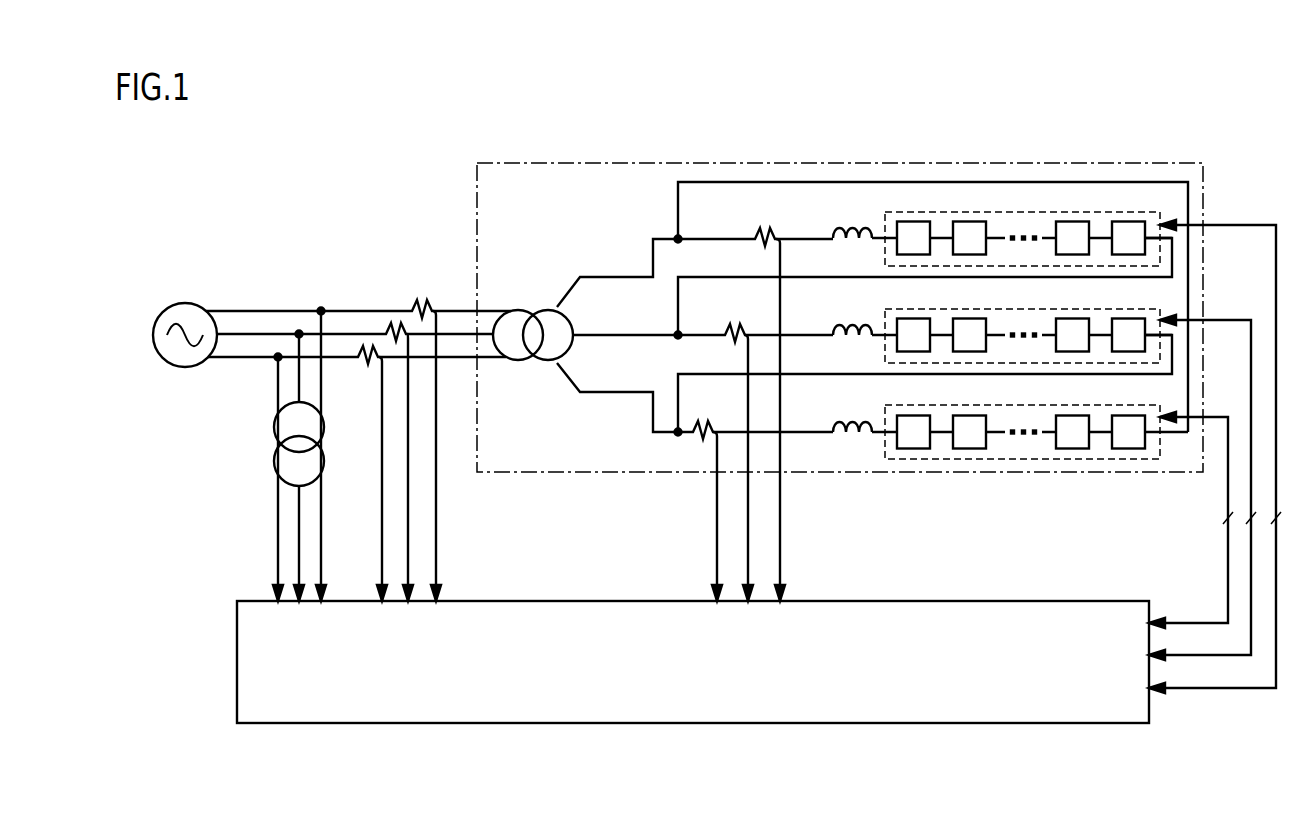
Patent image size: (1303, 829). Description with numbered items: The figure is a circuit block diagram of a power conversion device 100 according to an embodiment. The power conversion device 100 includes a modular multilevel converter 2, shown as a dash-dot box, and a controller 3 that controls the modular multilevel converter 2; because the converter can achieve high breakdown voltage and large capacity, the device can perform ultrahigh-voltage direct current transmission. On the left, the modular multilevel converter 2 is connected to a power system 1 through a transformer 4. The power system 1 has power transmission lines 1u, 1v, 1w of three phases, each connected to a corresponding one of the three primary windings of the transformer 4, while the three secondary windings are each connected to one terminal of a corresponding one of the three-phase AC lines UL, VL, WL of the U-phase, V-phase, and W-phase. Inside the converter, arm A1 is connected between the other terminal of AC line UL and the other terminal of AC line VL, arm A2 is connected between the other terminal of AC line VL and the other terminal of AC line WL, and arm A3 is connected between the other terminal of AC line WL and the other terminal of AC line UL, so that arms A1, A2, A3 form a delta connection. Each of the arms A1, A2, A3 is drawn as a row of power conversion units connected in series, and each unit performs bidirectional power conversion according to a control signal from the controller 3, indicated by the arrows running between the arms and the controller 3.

The power conversion device 100 is at (238, 146).
The power system 1 is at (164, 310).
The power transmission line 1u is at (228, 309).
The power transmission line 1v is at (264, 332).
The power transmission line 1w is at (228, 360).
The modular multilevel converter 2 is at (1153, 163).
The controller 3 is at (1108, 723).
The transformer 4 is at (520, 362).
The AC line UL is at (604, 276).
The AC line VL is at (604, 333).
The AC line WL is at (604, 390).
The arm A1 is at (915, 212).
The arm A2 is at (915, 309).
The arm A3 is at (915, 405).